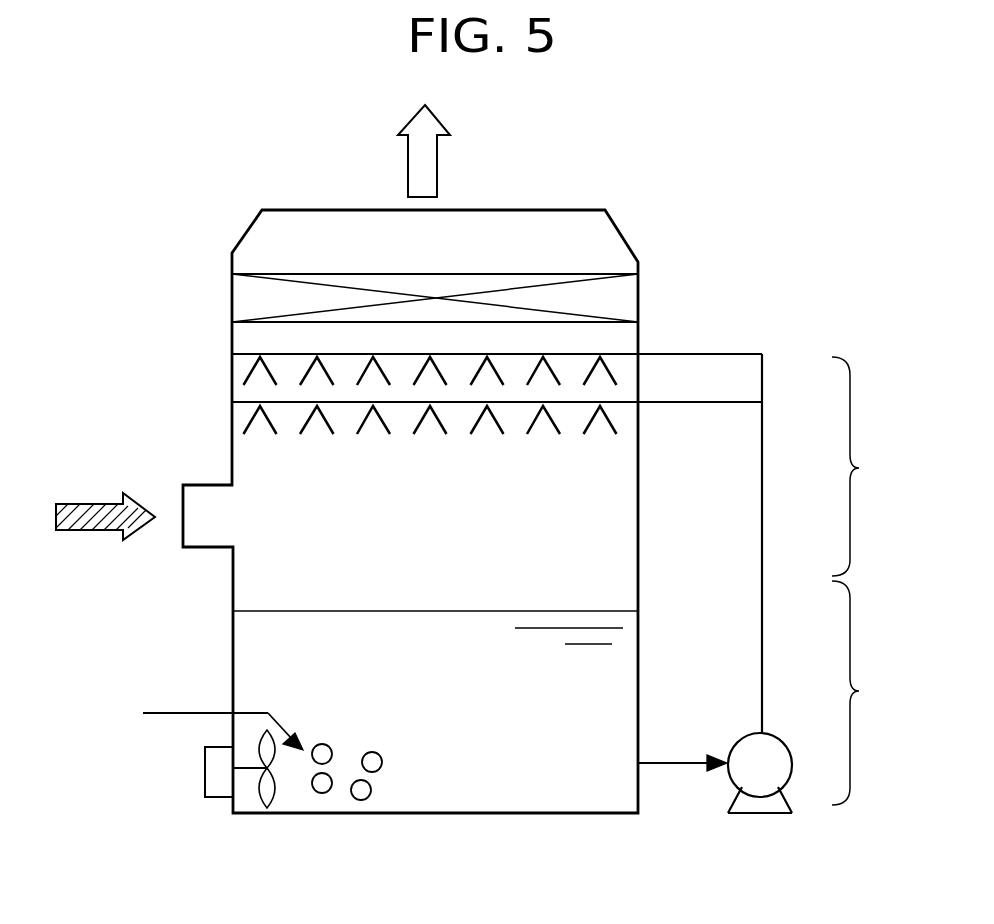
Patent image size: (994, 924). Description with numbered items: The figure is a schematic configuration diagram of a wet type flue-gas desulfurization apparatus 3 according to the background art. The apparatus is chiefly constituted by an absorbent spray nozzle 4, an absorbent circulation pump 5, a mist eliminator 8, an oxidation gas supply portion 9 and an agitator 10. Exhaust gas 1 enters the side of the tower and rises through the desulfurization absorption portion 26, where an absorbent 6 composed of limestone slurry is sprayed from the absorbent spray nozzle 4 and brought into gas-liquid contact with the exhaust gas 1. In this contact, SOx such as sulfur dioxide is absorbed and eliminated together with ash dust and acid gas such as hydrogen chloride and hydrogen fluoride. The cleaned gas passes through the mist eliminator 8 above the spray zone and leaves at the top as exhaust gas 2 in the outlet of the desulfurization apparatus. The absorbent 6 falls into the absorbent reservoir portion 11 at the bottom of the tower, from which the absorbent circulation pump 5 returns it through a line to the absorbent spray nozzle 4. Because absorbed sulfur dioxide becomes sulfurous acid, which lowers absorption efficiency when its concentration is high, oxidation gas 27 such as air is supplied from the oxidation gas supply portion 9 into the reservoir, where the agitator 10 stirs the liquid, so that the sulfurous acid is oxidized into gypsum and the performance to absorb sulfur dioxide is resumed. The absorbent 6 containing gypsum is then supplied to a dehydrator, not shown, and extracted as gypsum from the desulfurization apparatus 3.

The exhaust gas 1 is at (84, 510).
The exhaust gas in the outlet of the desulfurization apparatus 2 is at (427, 167).
The desulfurization apparatus 3 is at (668, 322).
The absorbent spray nozzle 4 is at (601, 406).
The absorbent circulation pump 5 is at (772, 752).
The absorbent 6 is at (576, 790).
The mist eliminator 8 is at (245, 296).
The oxidation gas supply portion 9 is at (173, 713).
The agitator 10 is at (216, 792).
The absorbent reservoir portion 11 is at (865, 693).
The desulfurization absorption portion 26 is at (865, 466).
The oxidation gas 27 is at (362, 795).